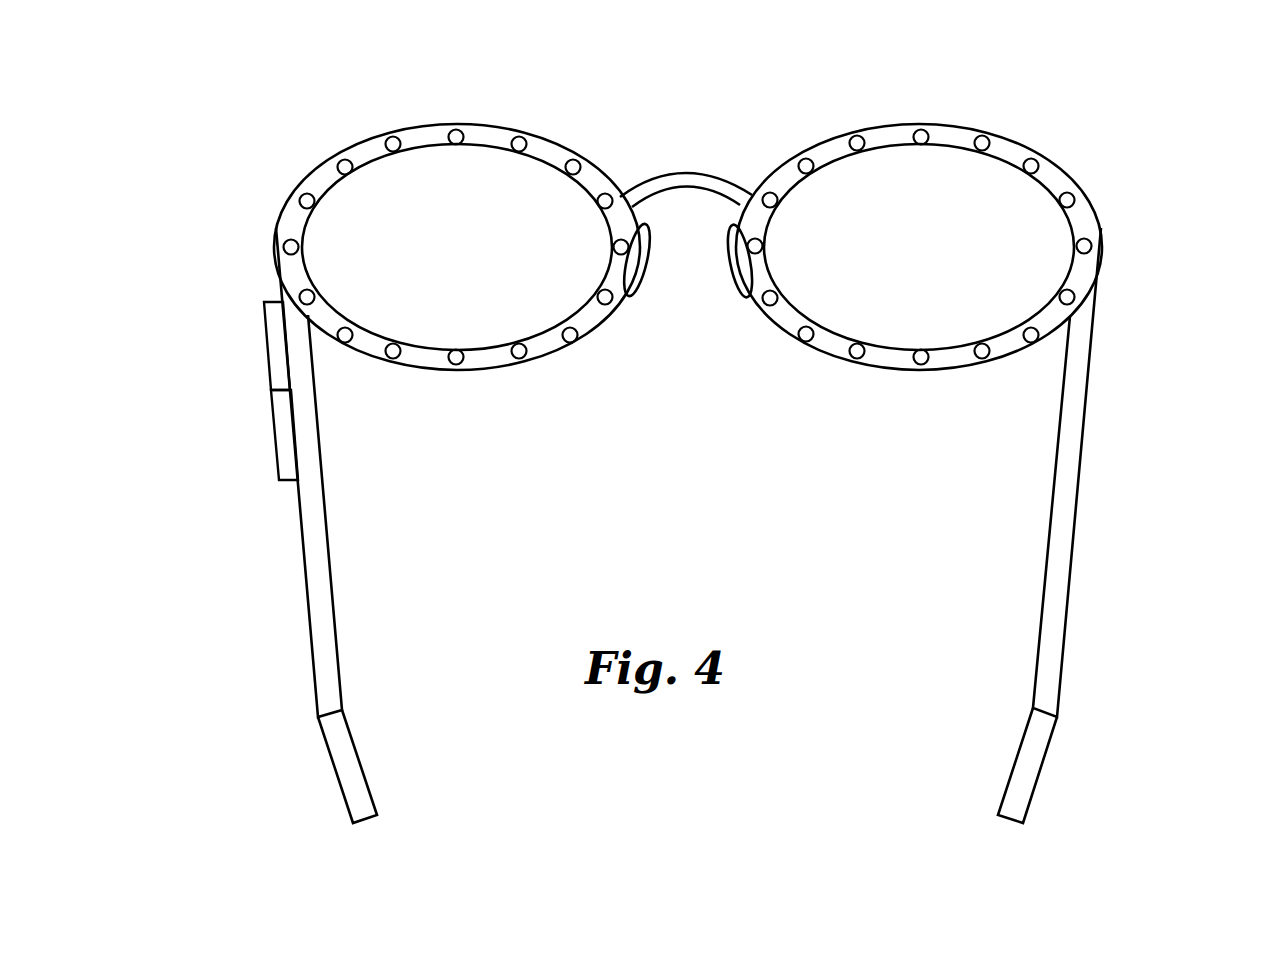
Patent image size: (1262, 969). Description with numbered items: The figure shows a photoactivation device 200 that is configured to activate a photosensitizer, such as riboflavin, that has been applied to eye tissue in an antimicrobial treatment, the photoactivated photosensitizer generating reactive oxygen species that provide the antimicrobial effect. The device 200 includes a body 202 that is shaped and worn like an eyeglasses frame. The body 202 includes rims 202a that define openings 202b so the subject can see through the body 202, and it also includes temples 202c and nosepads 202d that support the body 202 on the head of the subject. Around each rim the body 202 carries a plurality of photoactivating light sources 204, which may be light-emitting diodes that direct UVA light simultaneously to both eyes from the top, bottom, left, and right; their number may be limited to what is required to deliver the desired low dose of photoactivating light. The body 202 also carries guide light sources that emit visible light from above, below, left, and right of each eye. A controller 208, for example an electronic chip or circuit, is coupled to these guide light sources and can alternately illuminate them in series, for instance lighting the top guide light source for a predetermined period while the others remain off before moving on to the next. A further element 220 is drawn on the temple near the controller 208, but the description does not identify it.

The photoactivation device 200 is at (1150, 201).
The body 202 is at (292, 272).
The rims 202a is at (548, 350).
The openings 202b is at (478, 184).
The temples 202c is at (313, 563).
The nosepads 202d is at (641, 266).
The photoactivating light sources 204 is at (339, 162).
The controller 208 is at (276, 348).
The controller 220 is at (284, 438).